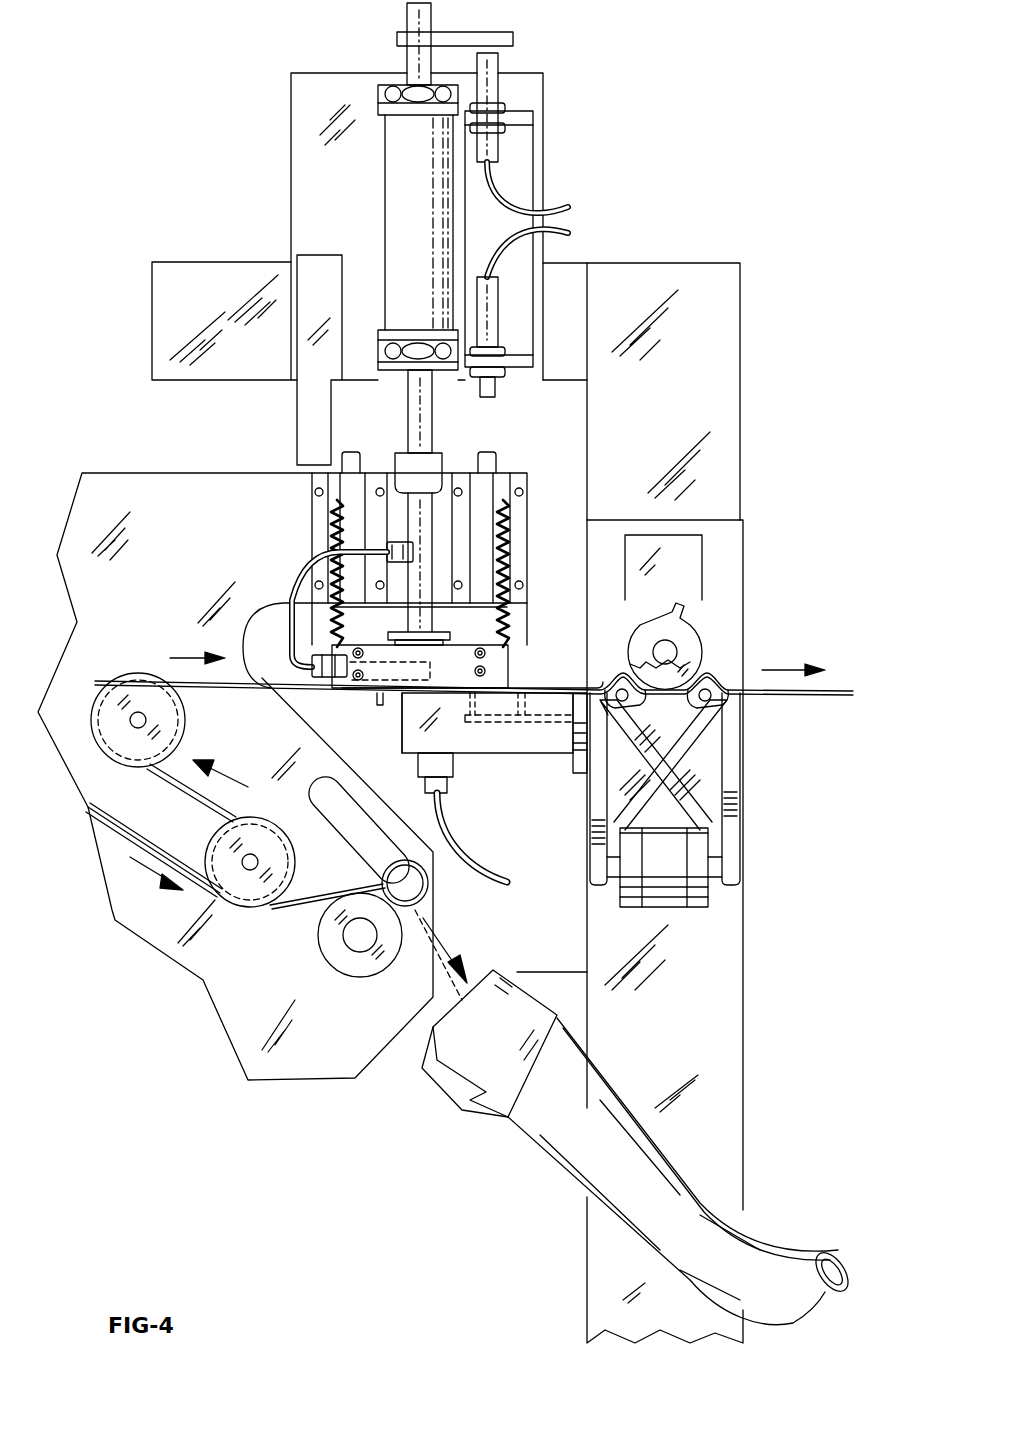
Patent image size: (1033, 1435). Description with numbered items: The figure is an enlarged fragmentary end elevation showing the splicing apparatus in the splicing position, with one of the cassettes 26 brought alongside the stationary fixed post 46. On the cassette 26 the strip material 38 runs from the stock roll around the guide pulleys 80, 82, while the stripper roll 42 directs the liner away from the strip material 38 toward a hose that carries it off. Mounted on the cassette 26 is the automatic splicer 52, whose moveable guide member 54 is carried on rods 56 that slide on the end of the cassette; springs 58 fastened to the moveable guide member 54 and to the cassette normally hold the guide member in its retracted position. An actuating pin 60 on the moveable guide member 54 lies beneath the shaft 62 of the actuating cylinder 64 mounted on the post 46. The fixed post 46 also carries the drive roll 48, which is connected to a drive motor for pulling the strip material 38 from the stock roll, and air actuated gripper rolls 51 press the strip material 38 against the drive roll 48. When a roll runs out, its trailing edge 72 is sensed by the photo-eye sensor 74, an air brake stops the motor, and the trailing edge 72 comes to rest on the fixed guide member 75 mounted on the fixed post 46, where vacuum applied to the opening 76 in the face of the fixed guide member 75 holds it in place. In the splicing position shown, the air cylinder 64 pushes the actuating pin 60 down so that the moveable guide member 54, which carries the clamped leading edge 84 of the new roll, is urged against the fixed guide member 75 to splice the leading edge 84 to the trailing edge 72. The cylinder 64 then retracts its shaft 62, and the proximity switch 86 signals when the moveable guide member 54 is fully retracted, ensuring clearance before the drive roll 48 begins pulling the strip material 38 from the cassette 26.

The cassette 26 is at (143, 488).
The strip material 38 is at (242, 687).
The stripper roll 42 is at (343, 975).
The fixed post 46 is at (727, 980).
The drive roll 48 is at (690, 645).
The gripper rolls 51 is at (612, 670).
The automatic splicer 52 is at (517, 540).
The moveable guide member 54 is at (497, 658).
The rods 56 is at (347, 457).
The springs 58 is at (320, 532).
The actuating pin 60 is at (418, 615).
The shaft 62 is at (432, 418).
The actuating cylinder 64 is at (405, 187).
The trailing edge 72 is at (423, 695).
The photo-eye sensor 74 is at (437, 765).
The fixed guide member 75 is at (482, 740).
The opening 76 is at (473, 697).
The guide pulley 80 is at (128, 690).
The guide pulley 82 is at (243, 893).
The leading edge 84 is at (440, 683).
The proximity switch 86 is at (495, 385).